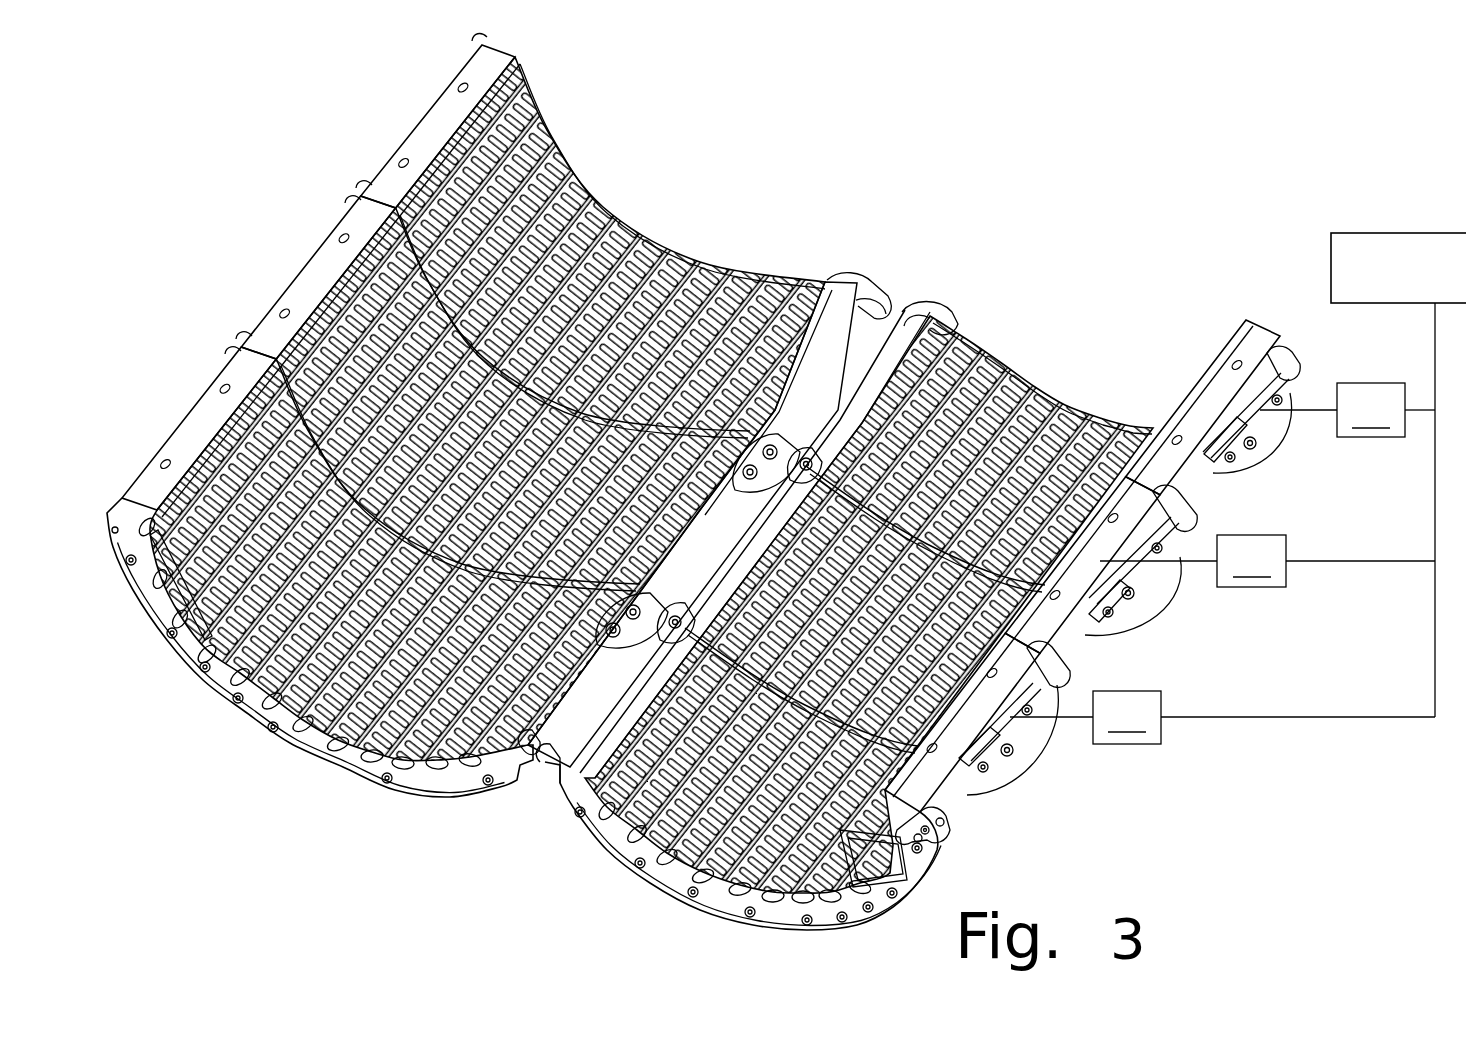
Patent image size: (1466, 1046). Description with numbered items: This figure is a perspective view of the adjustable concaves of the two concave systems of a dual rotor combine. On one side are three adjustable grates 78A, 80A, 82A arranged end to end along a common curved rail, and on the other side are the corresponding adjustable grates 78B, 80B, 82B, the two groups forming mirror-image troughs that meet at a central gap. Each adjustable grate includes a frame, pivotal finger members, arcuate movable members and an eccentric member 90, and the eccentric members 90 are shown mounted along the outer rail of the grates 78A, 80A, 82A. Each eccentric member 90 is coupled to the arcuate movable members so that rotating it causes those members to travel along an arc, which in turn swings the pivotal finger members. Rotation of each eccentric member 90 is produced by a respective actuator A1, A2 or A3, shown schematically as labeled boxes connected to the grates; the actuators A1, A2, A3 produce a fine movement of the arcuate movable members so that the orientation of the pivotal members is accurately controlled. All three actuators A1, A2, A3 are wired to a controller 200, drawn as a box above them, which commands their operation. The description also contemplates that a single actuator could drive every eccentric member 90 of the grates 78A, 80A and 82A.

The adjustable grate 78A is at (1043, 793).
The adjustable grate 80A is at (1158, 628).
The adjustable grate 82A is at (1278, 465).
The adjustable grate 78B is at (163, 410).
The adjustable grate 80B is at (294, 245).
The adjustable grate 82B is at (408, 100).
The eccentric member 90 is at (1190, 480).
The controller 200 is at (1381, 233).
The actuator A1 is at (1222, 717).
The actuator A2 is at (1267, 561).
The actuator A3 is at (1347, 410).